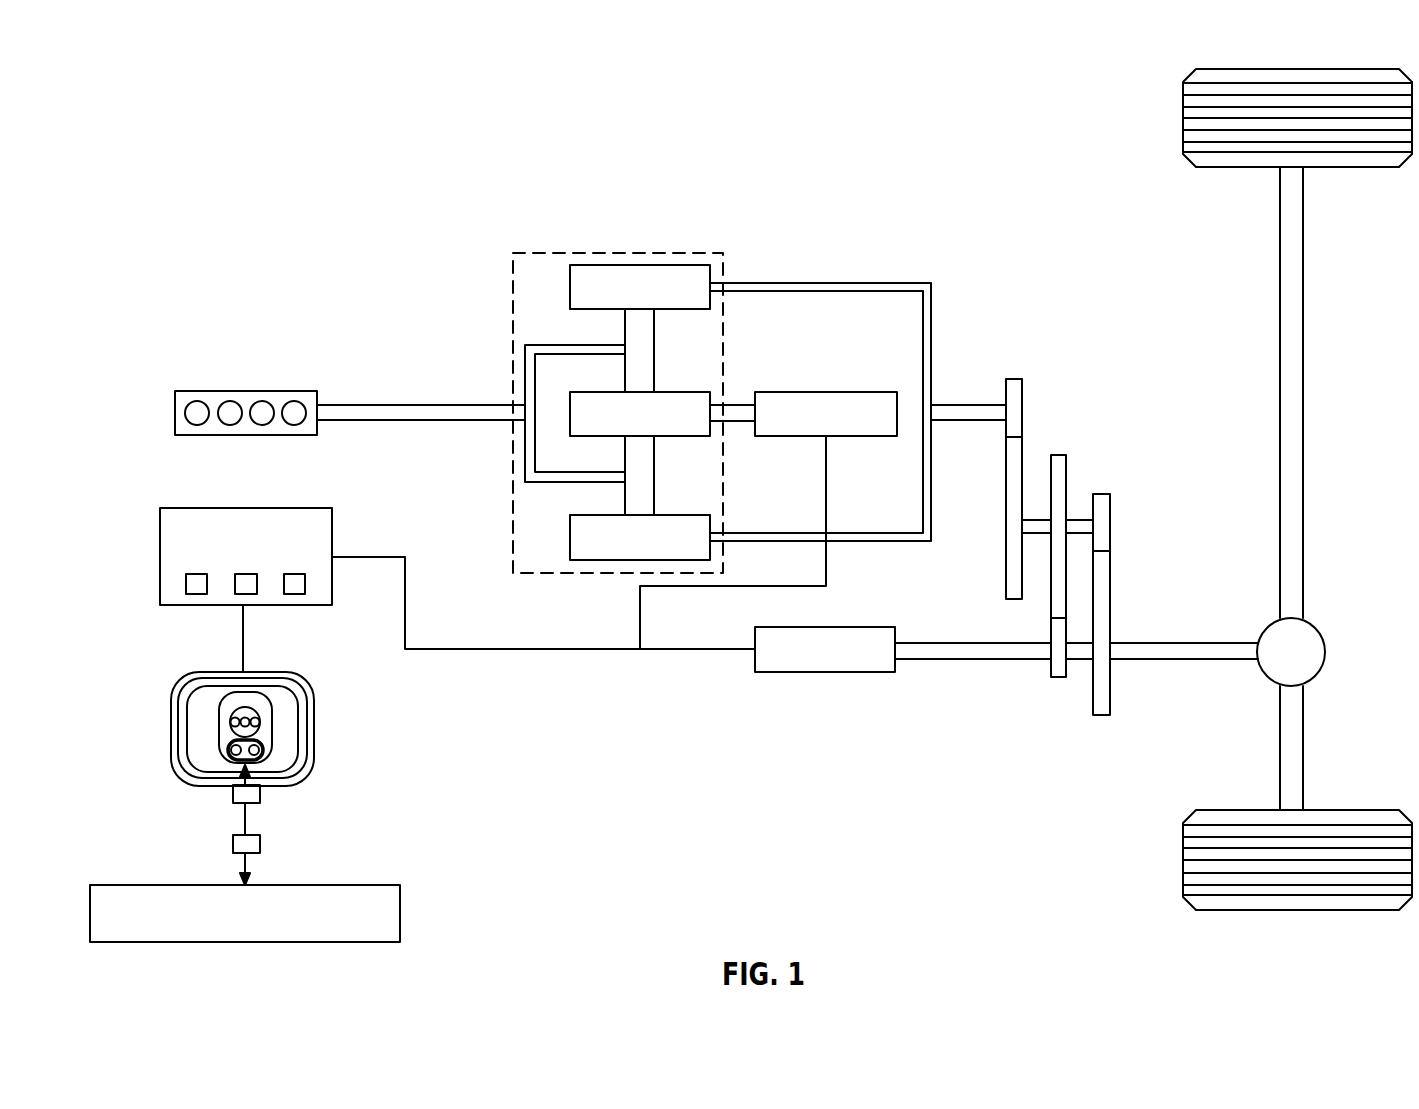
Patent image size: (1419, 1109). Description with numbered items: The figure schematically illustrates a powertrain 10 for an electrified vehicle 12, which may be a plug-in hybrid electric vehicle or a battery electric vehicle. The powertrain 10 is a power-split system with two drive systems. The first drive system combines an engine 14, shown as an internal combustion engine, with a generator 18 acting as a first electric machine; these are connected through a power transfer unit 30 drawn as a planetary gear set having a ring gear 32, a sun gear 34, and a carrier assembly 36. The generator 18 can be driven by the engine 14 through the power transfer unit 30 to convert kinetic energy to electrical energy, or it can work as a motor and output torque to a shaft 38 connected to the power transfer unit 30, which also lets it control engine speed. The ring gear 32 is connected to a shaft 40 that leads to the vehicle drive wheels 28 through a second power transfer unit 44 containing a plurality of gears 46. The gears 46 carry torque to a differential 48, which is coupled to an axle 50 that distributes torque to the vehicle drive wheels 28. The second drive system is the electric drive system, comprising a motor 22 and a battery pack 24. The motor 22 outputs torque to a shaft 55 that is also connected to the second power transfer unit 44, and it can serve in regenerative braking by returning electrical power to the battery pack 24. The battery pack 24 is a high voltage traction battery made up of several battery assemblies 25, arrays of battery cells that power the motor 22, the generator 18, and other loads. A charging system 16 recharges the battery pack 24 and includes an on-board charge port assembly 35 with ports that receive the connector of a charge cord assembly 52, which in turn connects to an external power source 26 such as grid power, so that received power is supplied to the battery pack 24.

The powertrain 10 is at (214, 154).
The electrified vehicle 12 is at (850, 217).
The engine 14 is at (228, 437).
The charging system 16 is at (164, 778).
The generator 18 is at (843, 392).
The motor 22 is at (808, 627).
The battery pack 24 is at (160, 557).
The battery assemblies 25 is at (197, 594).
The external power source 26 is at (400, 913).
The vehicle drive wheels 28 is at (1183, 117).
The power transfer unit 30 is at (532, 252).
The ring gear 32 is at (695, 265).
The sun gear 34 is at (617, 392).
The charge port assembly 35 is at (322, 730).
The carrier assembly 36 is at (525, 447).
The shaft 38 is at (740, 404).
The shaft 40 is at (948, 421).
The second power transfer unit 44 is at (1139, 376).
The gears 46 is at (1014, 379).
The differential 48 is at (1325, 652).
The axle 50 is at (1304, 435).
The charge cord assembly 52 is at (254, 820).
The shaft 55 is at (918, 659).